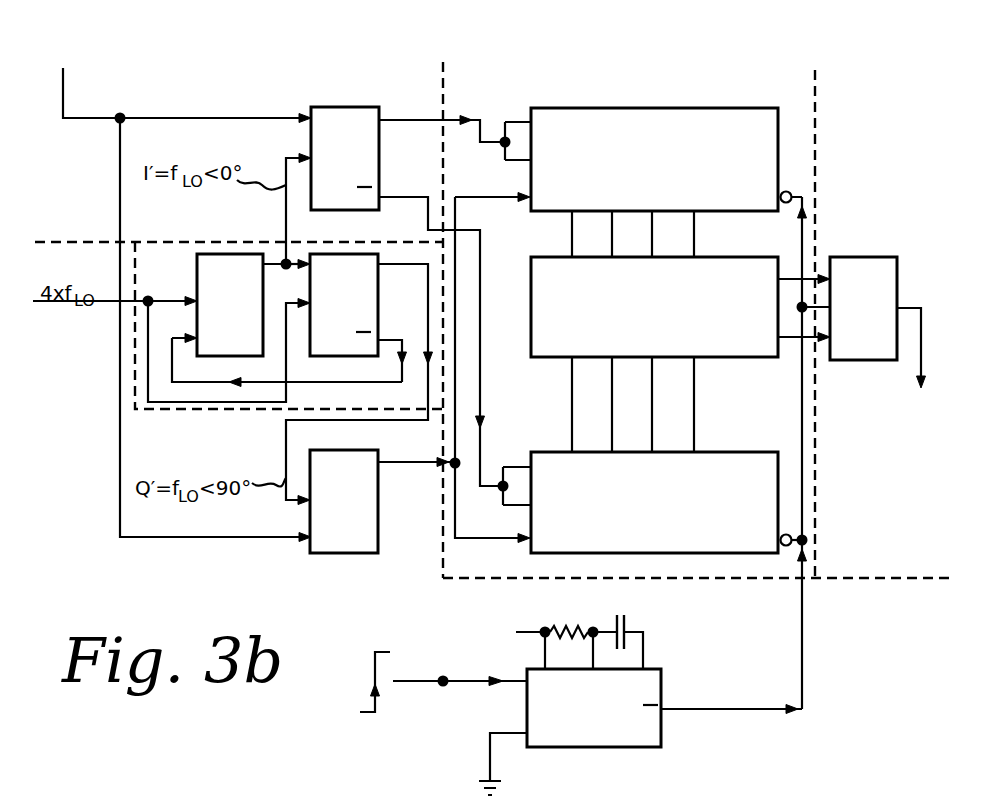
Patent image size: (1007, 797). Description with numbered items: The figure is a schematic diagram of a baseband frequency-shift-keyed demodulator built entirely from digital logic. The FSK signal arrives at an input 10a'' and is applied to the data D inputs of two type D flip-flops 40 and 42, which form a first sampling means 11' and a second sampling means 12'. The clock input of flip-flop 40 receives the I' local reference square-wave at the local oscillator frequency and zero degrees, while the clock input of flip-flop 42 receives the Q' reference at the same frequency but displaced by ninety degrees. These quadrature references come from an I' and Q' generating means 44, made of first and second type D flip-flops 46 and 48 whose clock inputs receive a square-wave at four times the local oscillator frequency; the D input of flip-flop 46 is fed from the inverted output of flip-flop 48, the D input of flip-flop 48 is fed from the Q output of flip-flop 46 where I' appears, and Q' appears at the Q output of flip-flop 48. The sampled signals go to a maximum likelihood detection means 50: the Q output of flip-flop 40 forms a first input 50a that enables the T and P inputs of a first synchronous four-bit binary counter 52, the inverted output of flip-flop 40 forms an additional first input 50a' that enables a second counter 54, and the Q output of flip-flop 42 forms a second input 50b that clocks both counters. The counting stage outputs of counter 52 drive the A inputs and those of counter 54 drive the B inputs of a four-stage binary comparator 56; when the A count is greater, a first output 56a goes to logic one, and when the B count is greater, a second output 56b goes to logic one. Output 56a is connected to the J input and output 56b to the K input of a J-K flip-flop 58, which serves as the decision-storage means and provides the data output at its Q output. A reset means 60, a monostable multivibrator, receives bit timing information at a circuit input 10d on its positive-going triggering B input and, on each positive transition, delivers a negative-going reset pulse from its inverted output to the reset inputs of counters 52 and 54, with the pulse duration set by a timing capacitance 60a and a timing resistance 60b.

The FSK input 10a'' is at (169, 284).
The first sampling means 11' is at (425, 320).
The second sampling means 12' is at (666, 586).
The type D flip-flop 40 is at (379, 158).
The type D flip-flop 42 is at (379, 510).
The I' and Q' generating means 44 is at (418, 322).
The first type D flip-flop 46 is at (198, 284).
The second type D flip-flop 48 is at (378, 284).
The maximum likelihood detection means 50 is at (768, 430).
The first input 50a is at (454, 111).
The additional first input 50a' is at (460, 351).
The second input 50b is at (457, 468).
The first synchronous M-bit binary counter 52 is at (741, 110).
The second synchronous M-bit binary counter 54 is at (741, 455).
The M-stage binary comparator 56 is at (715, 257).
The first (A B) output 56a is at (792, 277).
The second (A B) output 56b is at (790, 339).
The J-K flip-flop logic means 58 is at (866, 259).
The reset means 60 is at (661, 684).
The timing capacitance 60a is at (628, 627).
The timing resistance 60b is at (573, 629).
The circuit input 10d is at (446, 689).